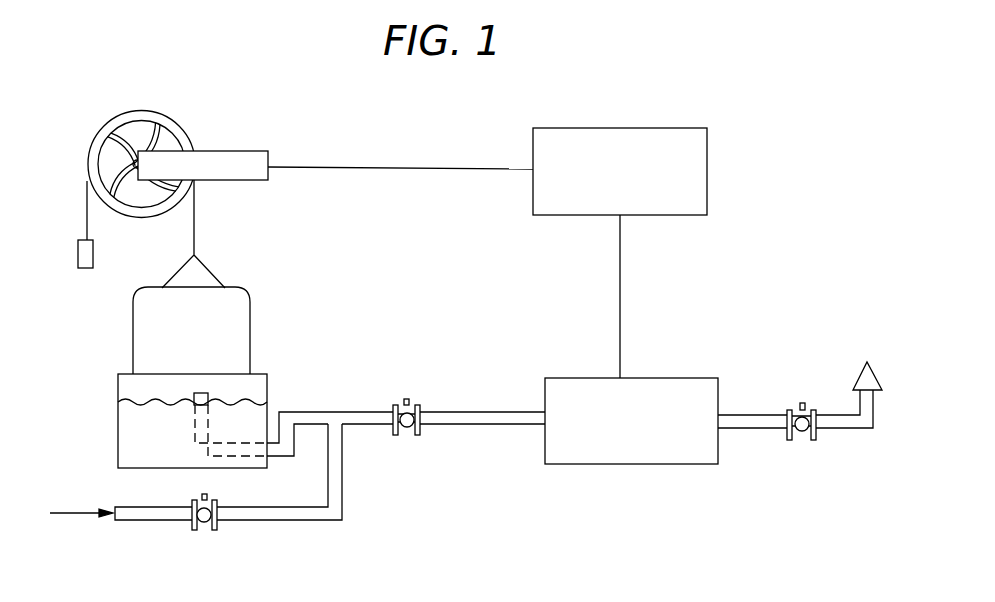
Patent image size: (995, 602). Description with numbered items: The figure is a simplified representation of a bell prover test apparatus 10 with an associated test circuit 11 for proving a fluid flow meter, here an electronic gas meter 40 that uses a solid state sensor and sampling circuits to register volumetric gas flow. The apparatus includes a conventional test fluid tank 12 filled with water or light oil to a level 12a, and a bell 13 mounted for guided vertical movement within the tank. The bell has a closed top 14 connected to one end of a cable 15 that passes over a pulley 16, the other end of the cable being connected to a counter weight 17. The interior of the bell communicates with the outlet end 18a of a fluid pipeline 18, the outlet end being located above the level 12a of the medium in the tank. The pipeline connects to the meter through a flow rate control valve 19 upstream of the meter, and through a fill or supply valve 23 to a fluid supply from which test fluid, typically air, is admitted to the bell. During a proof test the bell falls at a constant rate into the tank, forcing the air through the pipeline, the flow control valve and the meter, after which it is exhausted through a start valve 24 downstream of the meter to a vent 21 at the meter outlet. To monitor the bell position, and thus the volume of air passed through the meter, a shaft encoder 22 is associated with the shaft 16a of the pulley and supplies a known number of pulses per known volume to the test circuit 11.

The bell prover test apparatus 10 is at (100, 381).
The test circuit 11 is at (620, 253).
The test fluid tank 12 is at (118, 436).
The level 12a is at (267, 387).
The bell 13 is at (242, 318).
The closed top 14 is at (233, 288).
The cable 15 is at (88, 182).
The pulley 16 is at (127, 110).
The shaft 16a is at (155, 125).
The counter weight 17 is at (78, 267).
The fluid pipeline 18 is at (333, 412).
The outlet end 18a is at (199, 392).
The flow rate control valve 19 is at (400, 435).
The vent 21 is at (857, 391).
The shaft encoder 22 is at (237, 151).
The supply valve 23 is at (220, 505).
The start valve 24 is at (803, 440).
The electronic gas meter 40 is at (631, 421).